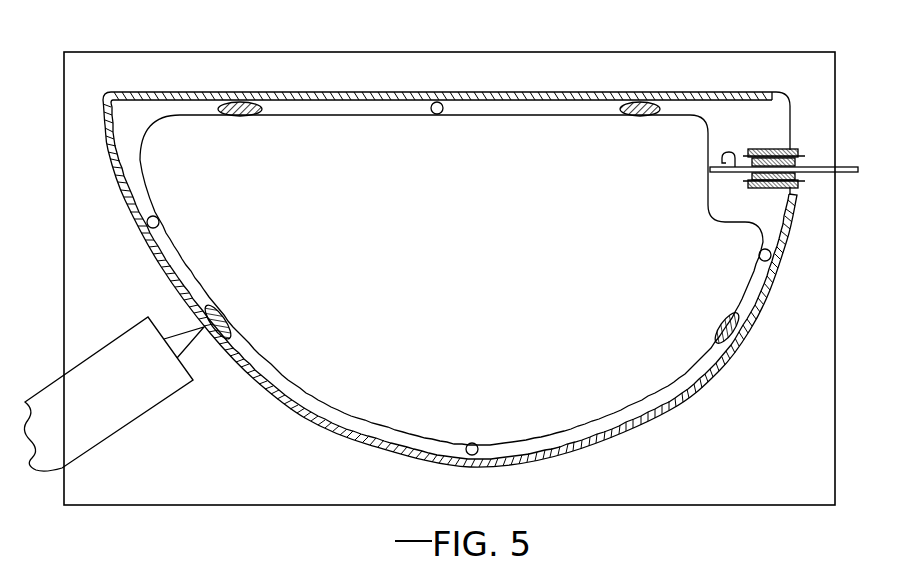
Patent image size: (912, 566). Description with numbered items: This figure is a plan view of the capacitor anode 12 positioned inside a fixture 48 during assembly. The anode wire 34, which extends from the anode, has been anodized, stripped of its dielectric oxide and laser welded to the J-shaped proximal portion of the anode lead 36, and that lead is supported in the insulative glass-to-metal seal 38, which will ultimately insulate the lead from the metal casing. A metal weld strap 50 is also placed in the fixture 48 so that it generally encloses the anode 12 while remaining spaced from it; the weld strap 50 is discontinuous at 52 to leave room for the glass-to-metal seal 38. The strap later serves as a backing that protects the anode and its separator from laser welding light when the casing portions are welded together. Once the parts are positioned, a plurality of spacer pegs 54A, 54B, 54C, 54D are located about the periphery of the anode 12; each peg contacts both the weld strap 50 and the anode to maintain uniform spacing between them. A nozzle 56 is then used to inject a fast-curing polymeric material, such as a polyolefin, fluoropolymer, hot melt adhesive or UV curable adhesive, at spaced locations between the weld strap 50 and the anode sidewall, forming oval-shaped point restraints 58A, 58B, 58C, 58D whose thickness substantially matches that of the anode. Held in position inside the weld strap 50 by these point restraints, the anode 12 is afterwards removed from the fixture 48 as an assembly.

The anode 12 is at (342, 135).
The anode wire 34 is at (718, 172).
The anode lead 36 is at (852, 173).
The glass-to-metal seal 38 is at (810, 142).
The fixture 48 is at (538, 78).
The weld strap 50 is at (797, 216).
The discontinuity of the weld strap 52 is at (786, 102).
The spacer peg 54A is at (437, 114).
The spacer peg 54B is at (158, 218).
The spacer peg 54C is at (473, 443).
The spacer peg 54D is at (758, 254).
The nozzle 56 is at (141, 398).
The polymeric point restraint 58A is at (247, 120).
The polymeric point restraint 58B is at (224, 316).
The polymeric point restraint 58C is at (718, 322).
The polymeric point restraint 58D is at (635, 117).